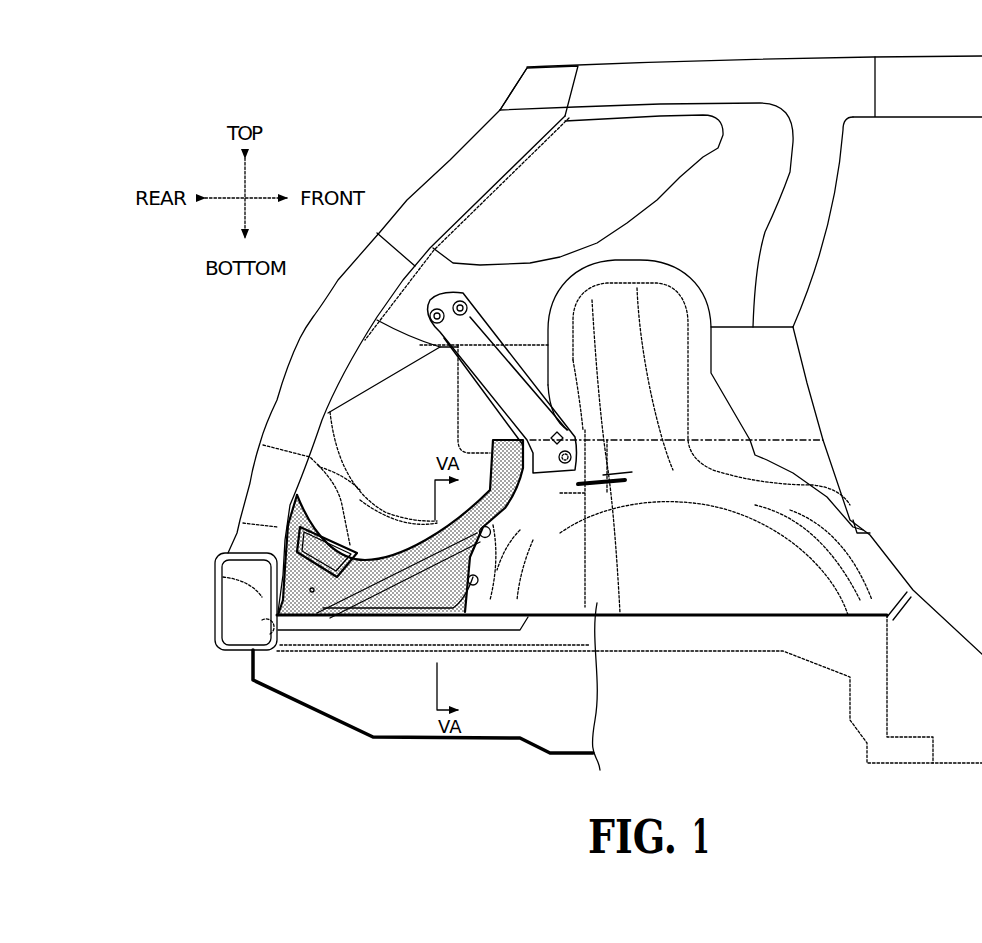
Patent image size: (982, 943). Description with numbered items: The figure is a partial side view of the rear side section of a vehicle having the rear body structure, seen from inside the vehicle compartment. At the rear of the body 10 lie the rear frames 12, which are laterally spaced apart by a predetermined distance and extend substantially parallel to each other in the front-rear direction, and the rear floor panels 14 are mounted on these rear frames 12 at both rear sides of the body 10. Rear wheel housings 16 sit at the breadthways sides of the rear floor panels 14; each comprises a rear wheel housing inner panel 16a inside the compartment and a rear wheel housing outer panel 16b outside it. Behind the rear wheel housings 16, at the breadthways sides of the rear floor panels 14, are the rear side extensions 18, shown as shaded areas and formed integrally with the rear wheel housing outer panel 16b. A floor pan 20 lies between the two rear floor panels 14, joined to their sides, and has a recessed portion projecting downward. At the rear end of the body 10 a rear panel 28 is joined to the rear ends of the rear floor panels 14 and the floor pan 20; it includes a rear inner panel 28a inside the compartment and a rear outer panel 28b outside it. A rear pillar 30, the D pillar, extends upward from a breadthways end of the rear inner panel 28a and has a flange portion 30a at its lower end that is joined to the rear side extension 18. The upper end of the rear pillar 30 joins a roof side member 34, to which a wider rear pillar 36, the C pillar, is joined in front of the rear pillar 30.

The body 10 is at (930, 44).
The rear frames 12 is at (337, 653).
The rear floor panels 14 is at (307, 652).
The rear wheel housings 16 is at (745, 417).
The rear wheel housing inner panel 16a is at (630, 363).
The rear wheel housing outer panel 16b is at (673, 512).
The rear side extensions 18 is at (263, 445).
The floor pan 20 is at (331, 720).
The rear panel 28 is at (226, 538).
The rear inner panel 28a is at (214, 573).
The rear outer panel 28b is at (214, 601).
The rear pillar (D pillar) 30 is at (337, 332).
The flange portion 30a is at (300, 476).
The roof side member 34 is at (695, 73).
The rear pillar (C pillar) 36 is at (740, 180).